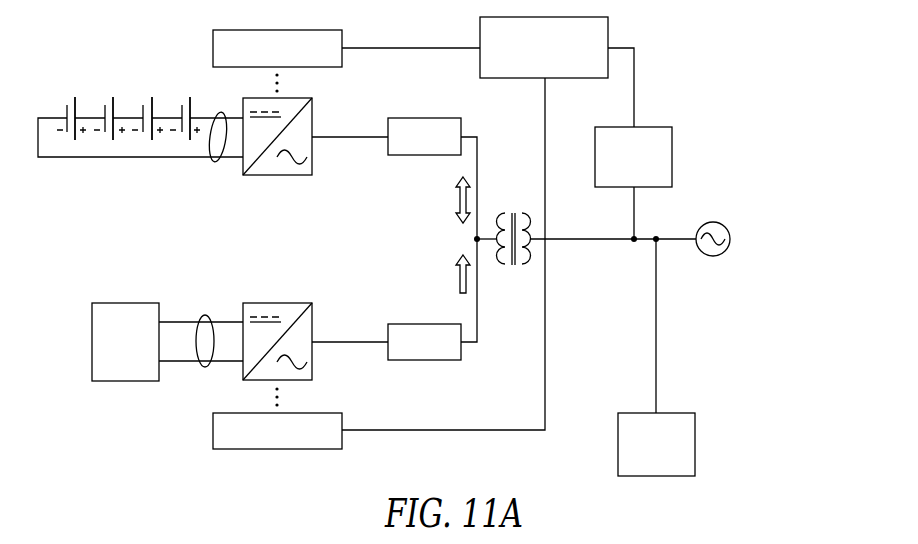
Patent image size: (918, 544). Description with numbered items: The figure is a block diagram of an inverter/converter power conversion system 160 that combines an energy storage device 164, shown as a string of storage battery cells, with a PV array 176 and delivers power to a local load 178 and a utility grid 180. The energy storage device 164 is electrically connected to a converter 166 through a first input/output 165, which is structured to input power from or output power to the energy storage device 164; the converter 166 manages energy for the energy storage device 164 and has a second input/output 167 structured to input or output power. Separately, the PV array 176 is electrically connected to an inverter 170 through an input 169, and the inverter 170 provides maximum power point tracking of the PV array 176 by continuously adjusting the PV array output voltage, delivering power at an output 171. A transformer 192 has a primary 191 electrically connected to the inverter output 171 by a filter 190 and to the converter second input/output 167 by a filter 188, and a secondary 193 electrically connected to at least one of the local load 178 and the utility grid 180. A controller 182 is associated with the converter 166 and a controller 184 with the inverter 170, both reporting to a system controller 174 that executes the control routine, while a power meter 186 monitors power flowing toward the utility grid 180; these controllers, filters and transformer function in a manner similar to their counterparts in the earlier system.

The power conversion system 160 is at (92, 221).
The energy storage device 164 is at (57, 89).
The first input/output 165 is at (214, 160).
The converter 166 is at (293, 177).
The second input/output 167 is at (338, 138).
The input 169 is at (210, 313).
The inverter 170 is at (284, 303).
The output 171 is at (368, 342).
The system controller 174 is at (582, 17).
The PV array 176 is at (102, 303).
The local load 178 is at (689, 413).
The utility grid 180 is at (718, 224).
The controller 182 is at (240, 30).
The controller 184 is at (300, 449).
The power meter 186 is at (670, 127).
The filter 188 is at (416, 118).
The filter 190 is at (440, 324).
The primary 191 is at (504, 266).
The transformer 192 is at (586, 245).
The secondary 193 is at (522, 266).